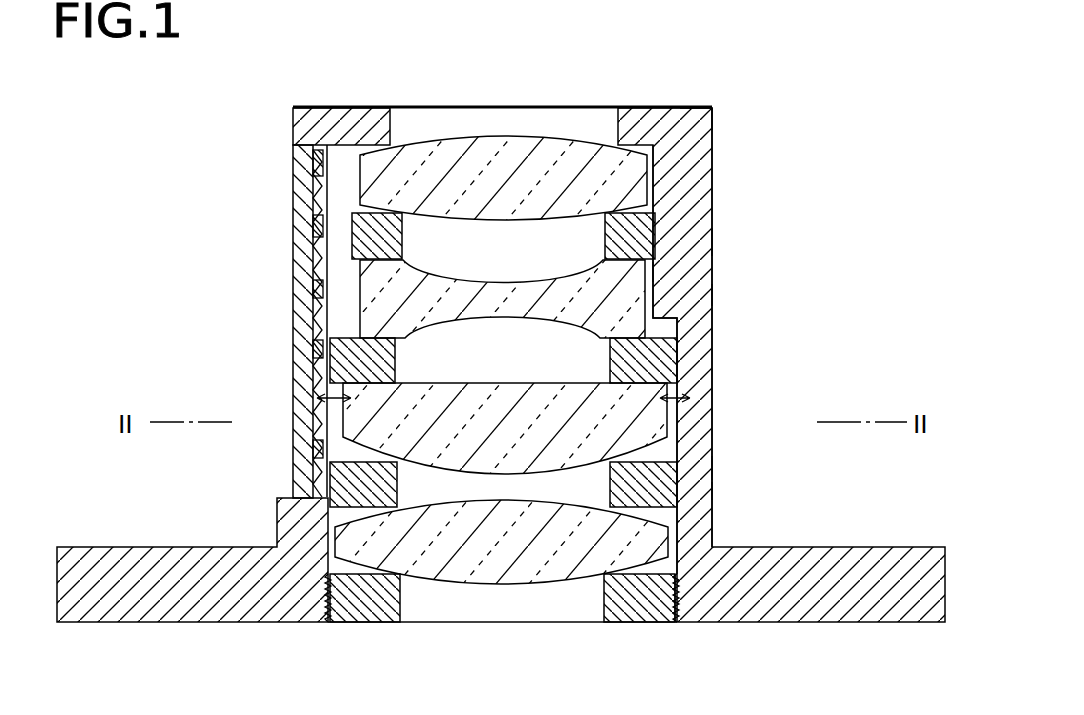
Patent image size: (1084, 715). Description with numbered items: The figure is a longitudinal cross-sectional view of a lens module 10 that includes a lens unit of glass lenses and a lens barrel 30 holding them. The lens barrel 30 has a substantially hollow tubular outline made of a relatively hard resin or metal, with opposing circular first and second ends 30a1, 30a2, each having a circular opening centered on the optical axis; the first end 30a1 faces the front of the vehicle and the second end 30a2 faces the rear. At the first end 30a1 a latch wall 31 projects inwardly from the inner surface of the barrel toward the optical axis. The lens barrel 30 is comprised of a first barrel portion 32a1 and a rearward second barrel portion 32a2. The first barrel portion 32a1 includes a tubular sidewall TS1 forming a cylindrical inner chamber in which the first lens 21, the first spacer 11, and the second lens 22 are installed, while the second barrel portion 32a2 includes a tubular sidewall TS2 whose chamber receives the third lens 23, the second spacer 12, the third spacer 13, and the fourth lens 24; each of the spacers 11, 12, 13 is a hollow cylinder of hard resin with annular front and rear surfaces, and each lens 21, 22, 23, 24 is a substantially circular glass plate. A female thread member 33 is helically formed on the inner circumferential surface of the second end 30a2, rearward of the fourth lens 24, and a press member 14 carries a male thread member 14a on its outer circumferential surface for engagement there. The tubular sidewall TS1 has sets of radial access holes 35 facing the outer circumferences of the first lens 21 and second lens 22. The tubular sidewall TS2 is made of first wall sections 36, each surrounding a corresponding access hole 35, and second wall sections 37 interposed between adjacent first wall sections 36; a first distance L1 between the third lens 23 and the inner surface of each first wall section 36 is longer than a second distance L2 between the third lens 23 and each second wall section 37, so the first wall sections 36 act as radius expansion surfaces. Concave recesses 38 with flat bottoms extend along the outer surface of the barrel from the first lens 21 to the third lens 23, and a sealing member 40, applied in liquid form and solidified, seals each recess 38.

The lens module 10 is at (769, 109).
The lens barrel 30 is at (726, 156).
The first end 30a1 is at (689, 97).
The second end 30a2 is at (678, 624).
The latch wall 31 is at (350, 107).
The first barrel portion 32a1 is at (727, 248).
The second barrel portion 32a2 is at (727, 474).
The female thread member 33 is at (672, 624).
The access holes 35 is at (318, 170).
The first wall sections 36 is at (318, 226).
The second wall sections 37 is at (713, 271).
The concave recesses 38 is at (318, 350).
The sealing member 40 is at (320, 291).
The first spacer 11 is at (321, 262).
The second spacer 12 is at (314, 388).
The third spacer 13 is at (314, 486).
The press member 14 is at (356, 624).
The male thread member 14a is at (328, 624).
The first lens 21 is at (655, 186).
The second lens 22 is at (657, 298).
The third lens 23 is at (667, 423).
The fourth lens 24 is at (672, 540).
The first distance L1 is at (330, 399).
The second distance L2 is at (712, 408).
The tubular sidewall TS1 is at (713, 294).
The tubular sidewall TS2 is at (713, 488).